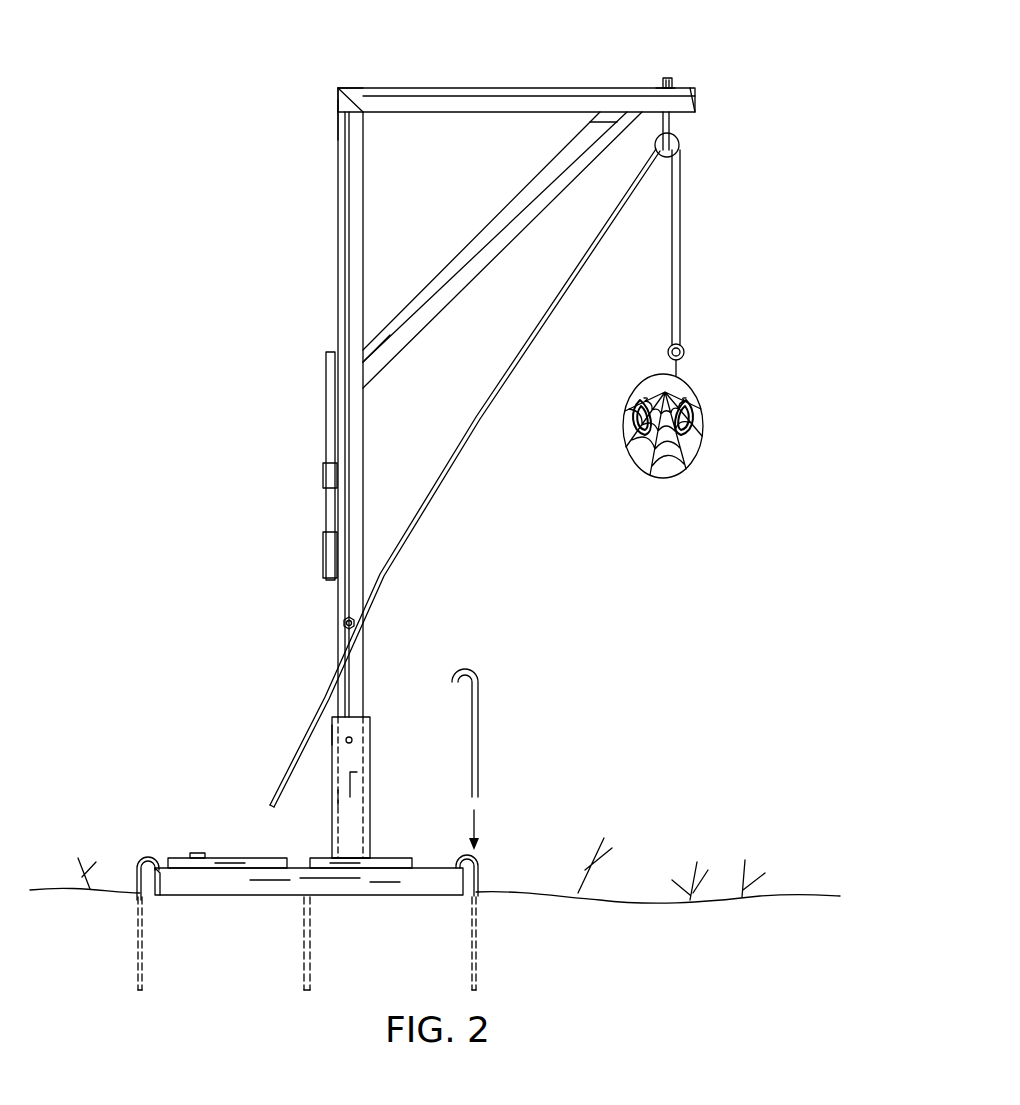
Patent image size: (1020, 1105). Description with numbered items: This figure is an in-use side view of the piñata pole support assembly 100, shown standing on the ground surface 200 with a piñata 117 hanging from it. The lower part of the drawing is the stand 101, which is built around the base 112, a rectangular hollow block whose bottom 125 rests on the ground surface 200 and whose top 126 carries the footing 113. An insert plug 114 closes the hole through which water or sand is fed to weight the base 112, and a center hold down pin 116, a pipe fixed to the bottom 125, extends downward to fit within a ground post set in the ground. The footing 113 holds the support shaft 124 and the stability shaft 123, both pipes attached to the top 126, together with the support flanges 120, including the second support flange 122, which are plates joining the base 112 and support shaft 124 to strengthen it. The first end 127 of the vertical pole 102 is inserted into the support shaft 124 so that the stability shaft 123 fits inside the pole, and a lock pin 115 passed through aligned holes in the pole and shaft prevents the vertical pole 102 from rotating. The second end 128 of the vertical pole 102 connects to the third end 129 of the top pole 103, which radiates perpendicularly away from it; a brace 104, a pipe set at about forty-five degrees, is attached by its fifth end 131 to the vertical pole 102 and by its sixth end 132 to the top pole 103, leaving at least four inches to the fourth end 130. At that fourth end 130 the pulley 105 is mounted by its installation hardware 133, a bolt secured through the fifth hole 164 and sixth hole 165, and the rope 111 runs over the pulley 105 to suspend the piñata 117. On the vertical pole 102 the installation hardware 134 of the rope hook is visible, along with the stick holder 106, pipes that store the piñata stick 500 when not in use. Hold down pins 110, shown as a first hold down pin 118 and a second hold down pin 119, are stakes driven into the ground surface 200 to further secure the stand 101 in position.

The piñata pole support assembly 100 is at (182, 274).
The stand 101 is at (155, 842).
The vertical pole 102 is at (336, 198).
The top pole 103 is at (430, 88).
The brace 104 is at (489, 222).
The pulley 105 is at (680, 145).
The stick holder 106 is at (322, 555).
The hold down pins 110 is at (138, 870).
The rope 111 is at (462, 458).
The base 112 is at (478, 826).
The footing 113 is at (368, 800).
The insert plug 114 is at (197, 853).
The lock pin 115 is at (352, 740).
The center hold down pin 116 is at (312, 972).
The piñata 117 is at (660, 480).
The first hold down pin 118 is at (478, 952).
The second hold down pin 119 is at (138, 945).
The support flanges 120 is at (338, 800).
The second support flange 122 is at (337, 867).
The stability shaft 123 is at (357, 775).
The support shaft 124 is at (332, 733).
The bottom of the base 125 is at (280, 898).
The top of the base 126 is at (292, 862).
The first end of the vertical pole 127 is at (375, 857).
The second end of the vertical pole 128 is at (340, 112).
The third end of the top pole 129 is at (362, 88).
The fourth end of the top pole 130 is at (688, 88).
The fifth end of the brace 131 is at (372, 372).
The sixth end of the brace 132 is at (600, 120).
The installation hardware of the pulley 133 is at (668, 78).
The installation hardware of the rope hook 134 is at (355, 622).
The fifth hole 164 is at (662, 86).
The sixth hole 165 is at (698, 113).
The ground surface 200 is at (627, 893).
The piñata stick 500 is at (326, 425).